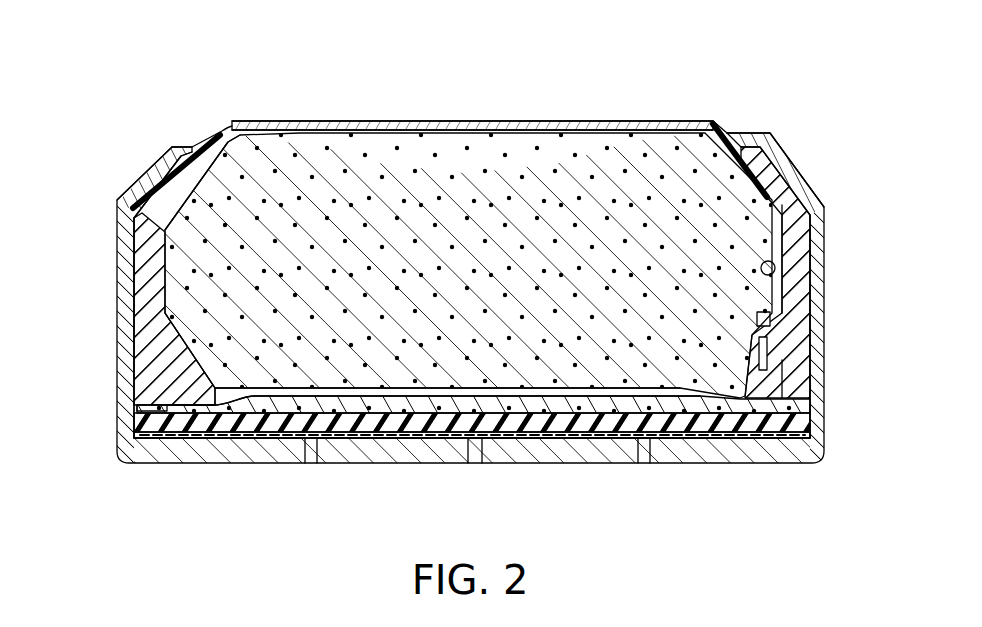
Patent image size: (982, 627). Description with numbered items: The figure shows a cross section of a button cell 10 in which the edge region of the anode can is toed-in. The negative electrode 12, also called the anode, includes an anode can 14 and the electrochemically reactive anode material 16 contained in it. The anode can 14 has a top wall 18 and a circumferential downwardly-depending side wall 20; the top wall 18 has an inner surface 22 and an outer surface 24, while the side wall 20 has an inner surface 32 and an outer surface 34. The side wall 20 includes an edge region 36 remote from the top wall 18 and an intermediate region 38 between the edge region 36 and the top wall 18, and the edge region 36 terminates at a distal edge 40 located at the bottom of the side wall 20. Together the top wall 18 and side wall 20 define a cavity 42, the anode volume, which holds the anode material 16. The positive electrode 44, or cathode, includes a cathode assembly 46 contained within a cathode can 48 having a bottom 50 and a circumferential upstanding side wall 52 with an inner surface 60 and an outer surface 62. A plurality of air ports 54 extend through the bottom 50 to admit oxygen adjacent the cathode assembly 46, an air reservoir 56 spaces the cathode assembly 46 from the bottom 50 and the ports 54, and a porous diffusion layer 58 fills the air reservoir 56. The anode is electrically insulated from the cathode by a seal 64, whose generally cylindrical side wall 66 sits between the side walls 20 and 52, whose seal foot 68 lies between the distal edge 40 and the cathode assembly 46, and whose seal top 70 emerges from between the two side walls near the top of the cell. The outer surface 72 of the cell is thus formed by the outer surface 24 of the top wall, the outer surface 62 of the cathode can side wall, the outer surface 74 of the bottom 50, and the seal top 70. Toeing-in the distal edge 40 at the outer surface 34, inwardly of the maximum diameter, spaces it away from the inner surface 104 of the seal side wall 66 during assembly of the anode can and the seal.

The cell 10 is at (752, 85).
The negative electrode 12 is at (433, 118).
The anode can 14 is at (518, 118).
The anode material 16 is at (385, 182).
The top wall 18 is at (585, 118).
The side wall 20 is at (823, 200).
The inner surface 22 is at (283, 123).
The outer surface 24 is at (320, 123).
The inner surface 32 is at (790, 268).
The outer surface 34 is at (823, 305).
The edge region 36 is at (800, 350).
The intermediate region 38 is at (822, 247).
The distal edge 40 is at (145, 398).
The cavity 42 is at (618, 133).
The positive electrode 44 is at (203, 470).
The cathode assembly 46 is at (348, 440).
The cathode can 48 is at (440, 468).
The bottom 50 is at (738, 467).
The side wall 52 is at (115, 243).
The air ports 54 is at (478, 464).
The air reservoir 56 is at (257, 450).
The porous diffusion layer 58 is at (590, 443).
The inner surface 60 is at (130, 290).
The outer surface 62 is at (120, 312).
The seal 64 is at (135, 205).
The side wall 66 is at (130, 345).
The seal foot 68 is at (130, 435).
The seal top 70 is at (200, 145).
The outer surface 72 is at (140, 172).
The outer surface 74 is at (330, 464).
The inner surface 104 is at (797, 323).